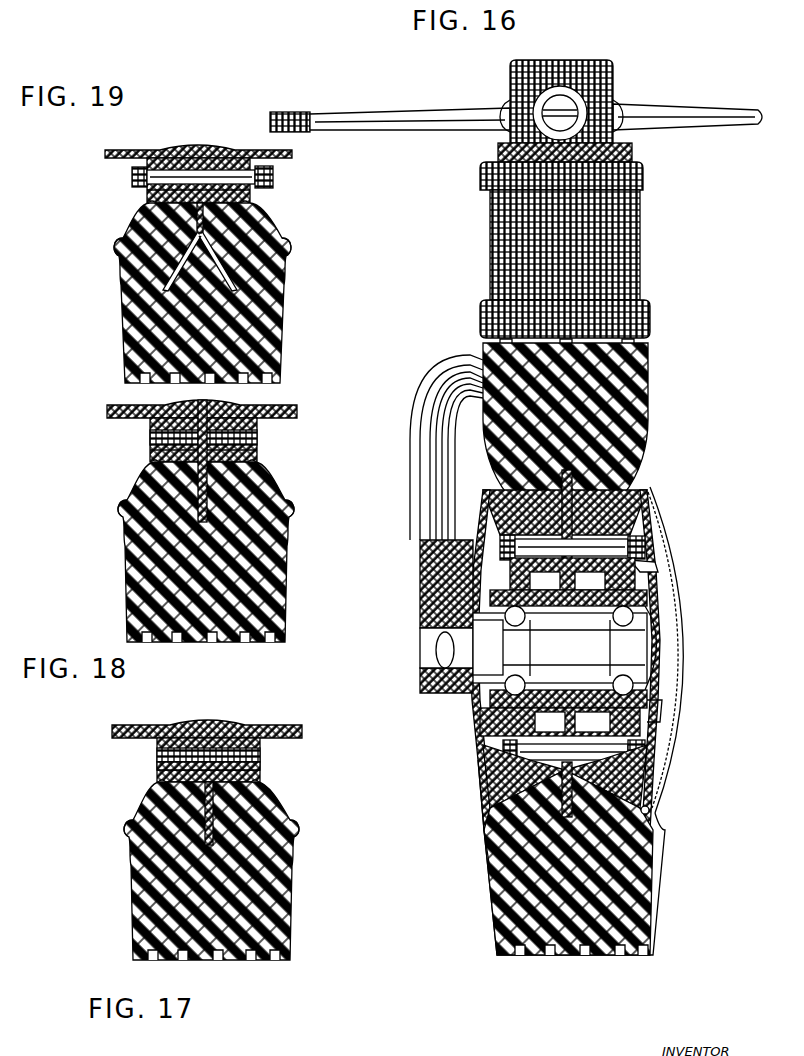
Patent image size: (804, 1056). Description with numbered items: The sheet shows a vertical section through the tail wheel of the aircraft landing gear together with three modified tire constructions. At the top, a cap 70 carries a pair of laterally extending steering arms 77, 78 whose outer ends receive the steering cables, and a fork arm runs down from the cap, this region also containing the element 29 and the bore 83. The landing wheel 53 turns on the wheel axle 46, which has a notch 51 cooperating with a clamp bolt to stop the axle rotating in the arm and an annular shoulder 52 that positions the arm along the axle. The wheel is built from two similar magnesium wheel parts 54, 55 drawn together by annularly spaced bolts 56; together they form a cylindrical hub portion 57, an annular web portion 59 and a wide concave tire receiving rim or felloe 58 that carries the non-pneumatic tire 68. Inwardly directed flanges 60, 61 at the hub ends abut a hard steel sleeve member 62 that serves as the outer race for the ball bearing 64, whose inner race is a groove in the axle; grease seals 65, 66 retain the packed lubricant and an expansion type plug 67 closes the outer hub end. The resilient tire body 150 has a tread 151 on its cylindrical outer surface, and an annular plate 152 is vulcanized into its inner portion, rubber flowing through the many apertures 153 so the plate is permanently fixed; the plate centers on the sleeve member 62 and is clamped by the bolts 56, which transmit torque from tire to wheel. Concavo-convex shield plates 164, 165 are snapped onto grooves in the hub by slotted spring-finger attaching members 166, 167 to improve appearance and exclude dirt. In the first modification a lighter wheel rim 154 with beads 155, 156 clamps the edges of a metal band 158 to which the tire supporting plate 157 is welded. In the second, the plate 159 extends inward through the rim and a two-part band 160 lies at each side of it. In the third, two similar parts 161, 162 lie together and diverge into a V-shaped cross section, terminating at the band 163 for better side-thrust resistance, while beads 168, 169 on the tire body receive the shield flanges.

In FIG. 16, the cylinder 29 is at (630, 258).
In FIG. 16, the wheel axle 46 is at (425, 640).
In FIG. 16, the notch 51 is at (440, 660).
In FIG. 16, the annular shoulder 52 is at (478, 668).
In FIG. 16, the landing wheel 53 is at (481, 843).
In FIG. 16, the wheel part 54 is at (520, 778).
In FIG. 16, the wheel part 55 is at (660, 785).
In FIG. 16, the bolts 56 is at (648, 752).
In FIG. 19, the bolts 56 is at (272, 180).
In FIG. 16, the cylindrical hub portion 57 is at (665, 720).
In FIG. 16, the tire receiving rim or felloe 58 is at (660, 808).
In FIG. 16, the annular web portion 59 is at (525, 770).
In FIG. 16, the inwardly directed flange 60 is at (493, 718).
In FIG. 16, the inwardly directed flange 61 is at (662, 710).
In FIG. 16, the sleeve member 62 is at (662, 702).
In FIG. 16, the ball bearing 64 is at (665, 615).
In FIG. 16, the grease seal 65 is at (480, 612).
In FIG. 16, the grease seal 66 is at (640, 605).
In FIG. 16, the expansion type plug 67 is at (668, 642).
In FIG. 16, the non-pneumatic tire 68 is at (680, 874).
In FIG. 16, the cap 70 is at (600, 60).
In FIG. 16, the steering arm 77 is at (422, 118).
In FIG. 16, the steering arm 78 is at (700, 110).
In FIG. 16, the bore 83 is at (556, 110).
In FIG. 16, the tire body 150 is at (635, 388).
In FIG. 19, the tire body 150 is at (275, 333).
In FIG. 18, the tire body 150 is at (275, 595).
In FIG. 17, the tire body 150 is at (285, 918).
In FIG. 16, the tread 151 is at (648, 955).
In FIG. 19, the tread 151 is at (278, 378).
In FIG. 18, the tread 151 is at (280, 645).
In FIG. 17, the tread 151 is at (282, 960).
In FIG. 16, the annular plate 152 is at (590, 470).
In FIG. 16, the apertures 153 is at (490, 875).
In FIG. 17, the wheel rim 154 is at (262, 765).
In FIG. 19, the flange or bead 155 is at (255, 198).
In FIG. 18, the flange or bead 155 is at (257, 458).
In FIG. 17, the flange or bead 155 is at (262, 781).
In FIG. 19, the bead 156 is at (150, 205).
In FIG. 18, the bead 156 is at (152, 466).
In FIG. 17, the bead 156 is at (160, 786).
In FIG. 17, the tire supporting plate 157 is at (220, 812).
In FIG. 17, the metal band 158 is at (185, 772).
In FIG. 18, the plate 159 is at (230, 480).
In FIG. 18, the band 160 is at (160, 458).
In FIG. 19, the reinforcing member part 161 is at (250, 262).
In FIG. 19, the reinforcing member part 162 is at (165, 290).
In FIG. 19, the band 163 is at (140, 183).
In FIG. 16, the shield plate 164 is at (485, 800).
In FIG. 16, the shield plate 165 is at (660, 518).
In FIG. 16, the attaching member 166 is at (495, 560).
In FIG. 16, the attaching member 167 is at (656, 562).
In FIG. 19, the bead 168 is at (290, 245).
In FIG. 18, the bead 168 is at (290, 512).
In FIG. 17, the bead 168 is at (298, 834).
In FIG. 19, the bead 169 is at (114, 247).
In FIG. 18, the bead 169 is at (118, 508).
In FIG. 17, the bead 169 is at (124, 832).